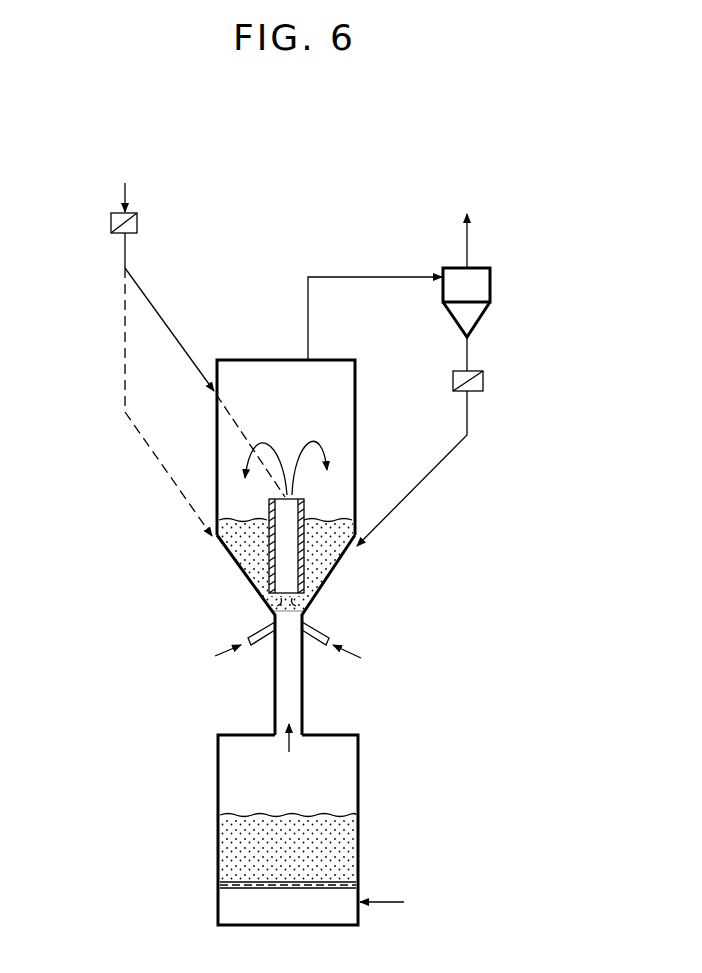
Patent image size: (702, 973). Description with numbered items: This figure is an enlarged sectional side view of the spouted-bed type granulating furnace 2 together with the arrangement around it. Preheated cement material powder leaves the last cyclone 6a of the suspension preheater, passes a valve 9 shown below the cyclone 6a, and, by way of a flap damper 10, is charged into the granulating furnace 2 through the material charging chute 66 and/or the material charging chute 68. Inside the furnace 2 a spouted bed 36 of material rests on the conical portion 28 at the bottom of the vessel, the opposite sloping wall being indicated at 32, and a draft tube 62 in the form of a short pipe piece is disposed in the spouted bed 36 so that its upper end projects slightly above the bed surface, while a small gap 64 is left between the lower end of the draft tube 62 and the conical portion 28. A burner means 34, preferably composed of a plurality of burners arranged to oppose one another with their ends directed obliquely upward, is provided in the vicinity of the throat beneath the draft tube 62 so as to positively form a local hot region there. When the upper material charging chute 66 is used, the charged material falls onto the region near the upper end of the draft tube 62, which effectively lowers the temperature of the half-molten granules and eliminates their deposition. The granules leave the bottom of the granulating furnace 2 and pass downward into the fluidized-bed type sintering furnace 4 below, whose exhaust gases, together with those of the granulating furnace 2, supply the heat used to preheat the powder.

The spouted-bed type granulating furnace 2 is at (217, 457).
The fluidized-bed type sintering furnace 4 is at (217, 782).
The cyclone 6a is at (492, 290).
The valve 9 is at (485, 383).
The flap damper 10 is at (111, 221).
The conical portion 28 is at (250, 578).
The conical wall 32 is at (310, 620).
The burner means 34 is at (260, 632).
The spouted bed 36 is at (240, 550).
The draft tube 62 is at (337, 565).
The small gap 64 is at (268, 608).
The material charging chute 66 is at (173, 330).
The material charging chute 68 is at (123, 358).